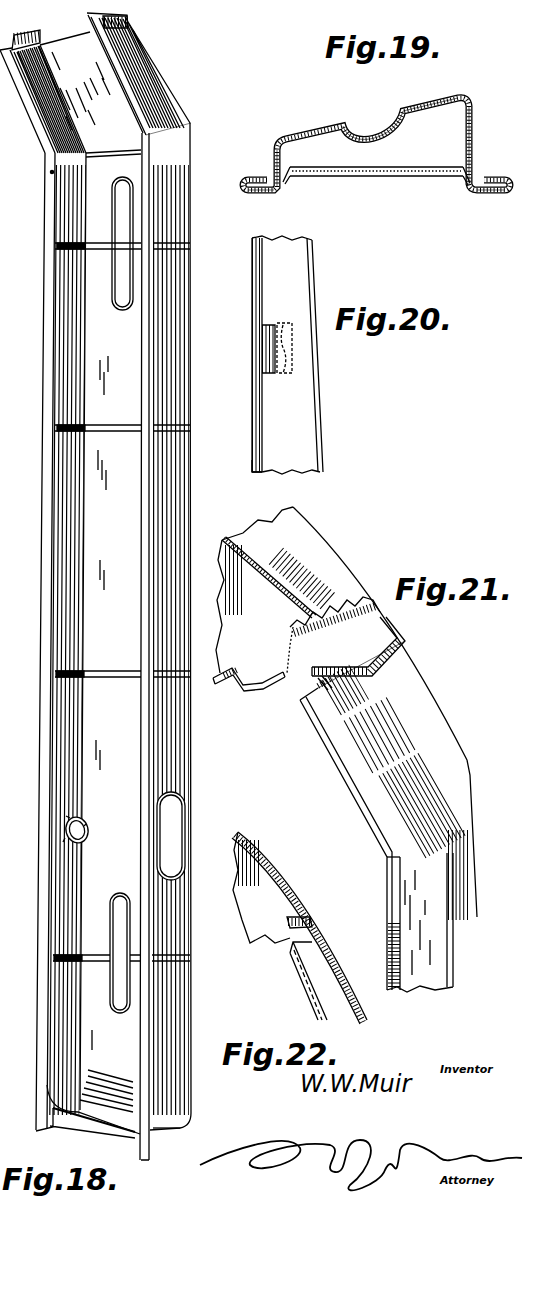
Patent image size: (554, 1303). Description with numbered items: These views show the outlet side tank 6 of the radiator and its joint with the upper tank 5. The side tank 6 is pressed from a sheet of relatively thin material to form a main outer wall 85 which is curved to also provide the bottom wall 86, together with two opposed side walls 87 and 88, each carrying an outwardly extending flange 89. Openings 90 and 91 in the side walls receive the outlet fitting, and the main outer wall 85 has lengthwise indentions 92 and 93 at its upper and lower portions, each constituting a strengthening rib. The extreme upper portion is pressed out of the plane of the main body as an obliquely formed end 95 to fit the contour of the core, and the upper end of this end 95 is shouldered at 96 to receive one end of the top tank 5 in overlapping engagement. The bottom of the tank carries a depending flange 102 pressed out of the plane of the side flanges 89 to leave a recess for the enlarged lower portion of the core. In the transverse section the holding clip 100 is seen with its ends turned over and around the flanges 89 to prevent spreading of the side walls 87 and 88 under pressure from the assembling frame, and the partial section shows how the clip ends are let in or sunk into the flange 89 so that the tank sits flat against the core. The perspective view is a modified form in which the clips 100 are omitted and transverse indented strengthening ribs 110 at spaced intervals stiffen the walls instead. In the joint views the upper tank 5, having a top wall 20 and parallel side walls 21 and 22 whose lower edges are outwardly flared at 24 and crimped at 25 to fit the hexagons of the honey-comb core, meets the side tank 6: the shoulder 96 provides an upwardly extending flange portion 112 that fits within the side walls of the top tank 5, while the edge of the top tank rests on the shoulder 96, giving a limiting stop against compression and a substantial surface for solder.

In FIG. 21, the upper tank 5 is at (310, 530).
In FIG. 22, the upper tank 5 is at (267, 872).
In FIG. 18, the side tank 6 is at (190, 326).
In FIG. 19, the side tank 6 is at (440, 94).
In FIG. 20, the side tank 6 is at (318, 404).
In FIG. 21, the side tank 6 is at (473, 838).
In FIG. 21, the top wall 20 is at (247, 536).
In FIG. 21, the side wall 21 is at (293, 655).
In FIG. 21, the side wall 22 is at (335, 624).
In FIG. 21, the outwardly flared edge 24 is at (232, 688).
In FIG. 21, the crimping 25 is at (223, 673).
In FIG. 19, the main outer wall 85 is at (430, 117).
In FIG. 18, the bottom wall 86 is at (153, 1127).
In FIG. 19, the side wall 87 is at (290, 157).
In FIG. 19, the side wall 88 is at (468, 140).
In FIG. 20, the side wall 88 is at (275, 458).
In FIG. 19, the flange 89 is at (258, 197).
In FIG. 20, the flange 89 is at (263, 260).
In FIG. 21, the flange 89 is at (360, 800).
In FIG. 18, the opening 90 is at (88, 833).
In FIG. 18, the opening 91 is at (167, 818).
In FIG. 18, the indention 92 is at (128, 208).
In FIG. 19, the indention 92 is at (377, 124).
In FIG. 18, the indention 93 is at (118, 910).
In FIG. 18, the obliquely formed end 95 is at (157, 85).
In FIG. 18, the shoulder 96 is at (128, 23).
In FIG. 21, the shoulder 96 is at (382, 668).
In FIG. 22, the shoulder 96 is at (327, 938).
In FIG. 19, the holding clip 100 is at (420, 167).
In FIG. 20, the holding clip 100 is at (267, 322).
In FIG. 18, the depending flange 102 is at (77, 1132).
In FIG. 18, the indented strengthening rib 110 is at (187, 238).
In FIG. 21, the flange portion 112 is at (347, 678).
In FIG. 22, the flange portion 112 is at (286, 920).